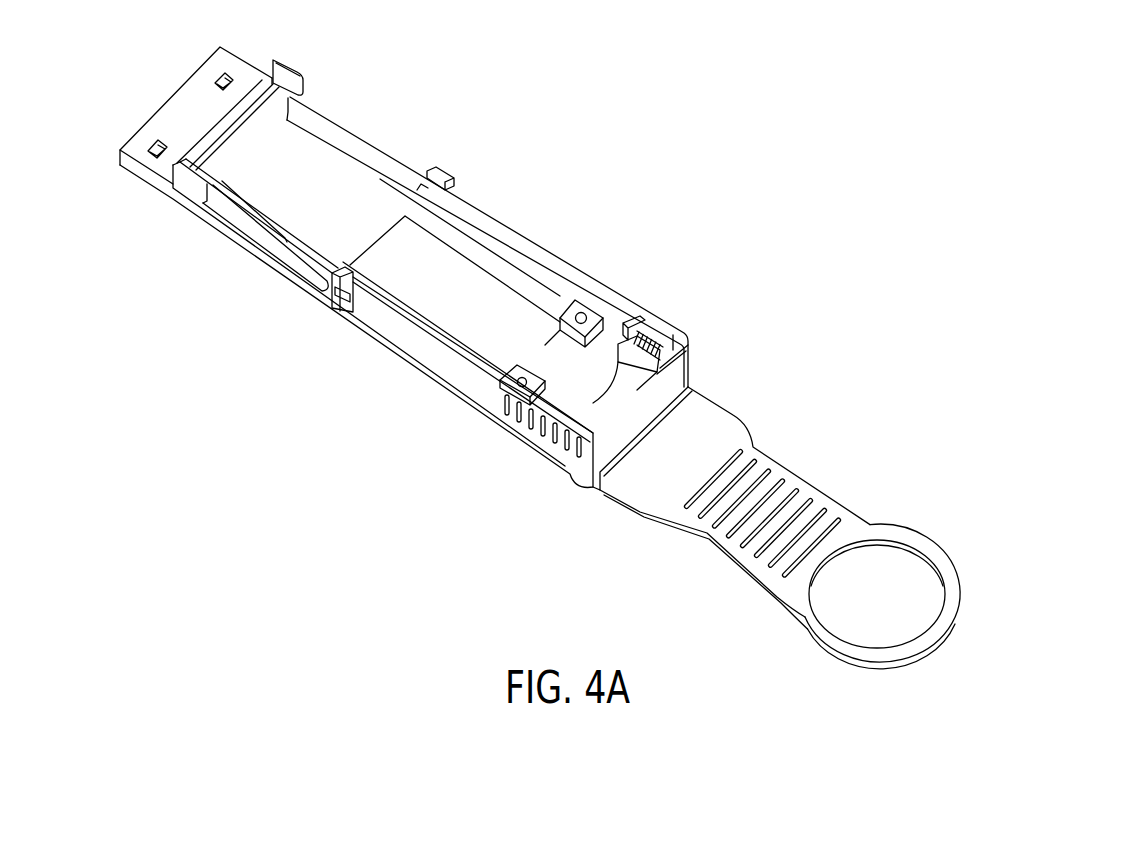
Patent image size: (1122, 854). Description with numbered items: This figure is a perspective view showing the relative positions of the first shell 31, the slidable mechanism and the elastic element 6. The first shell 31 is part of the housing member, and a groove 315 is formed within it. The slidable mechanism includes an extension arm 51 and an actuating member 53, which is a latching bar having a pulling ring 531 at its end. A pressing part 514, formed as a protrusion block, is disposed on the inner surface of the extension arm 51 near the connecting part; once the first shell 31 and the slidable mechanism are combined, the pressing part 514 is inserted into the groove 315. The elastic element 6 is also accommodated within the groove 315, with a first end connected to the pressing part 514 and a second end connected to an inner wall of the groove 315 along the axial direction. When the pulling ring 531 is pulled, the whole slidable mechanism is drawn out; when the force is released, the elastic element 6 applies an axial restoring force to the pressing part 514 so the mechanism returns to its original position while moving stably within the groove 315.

The first shell 31 is at (313, 158).
The extension arm 51 is at (490, 212).
The pressing part 514 is at (655, 332).
The groove 315 is at (660, 337).
The elastic element 6 is at (660, 357).
The actuating member 53 is at (700, 437).
The pulling ring 531 is at (948, 590).